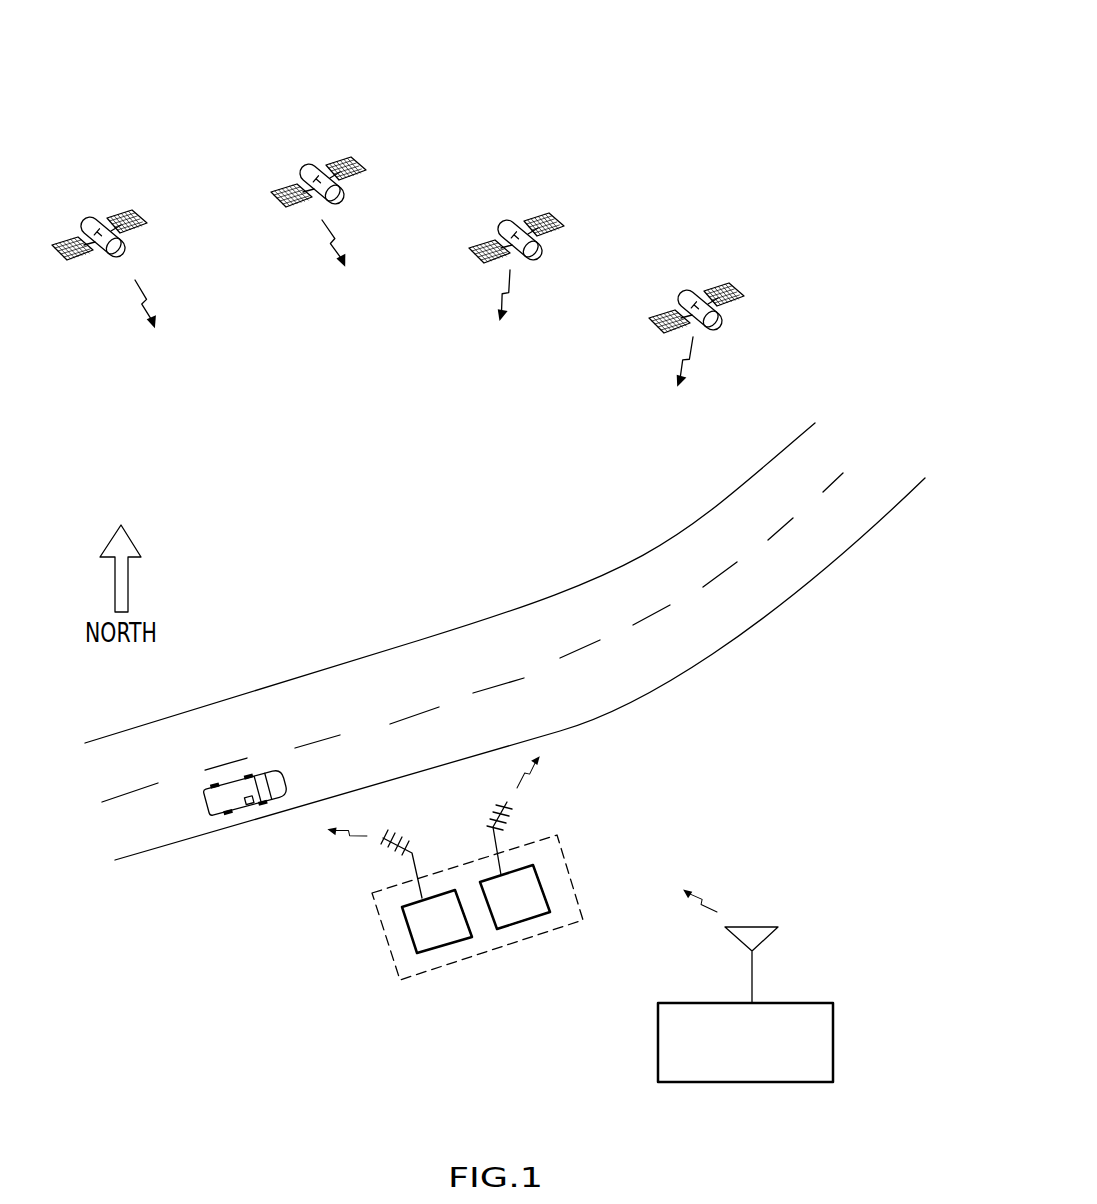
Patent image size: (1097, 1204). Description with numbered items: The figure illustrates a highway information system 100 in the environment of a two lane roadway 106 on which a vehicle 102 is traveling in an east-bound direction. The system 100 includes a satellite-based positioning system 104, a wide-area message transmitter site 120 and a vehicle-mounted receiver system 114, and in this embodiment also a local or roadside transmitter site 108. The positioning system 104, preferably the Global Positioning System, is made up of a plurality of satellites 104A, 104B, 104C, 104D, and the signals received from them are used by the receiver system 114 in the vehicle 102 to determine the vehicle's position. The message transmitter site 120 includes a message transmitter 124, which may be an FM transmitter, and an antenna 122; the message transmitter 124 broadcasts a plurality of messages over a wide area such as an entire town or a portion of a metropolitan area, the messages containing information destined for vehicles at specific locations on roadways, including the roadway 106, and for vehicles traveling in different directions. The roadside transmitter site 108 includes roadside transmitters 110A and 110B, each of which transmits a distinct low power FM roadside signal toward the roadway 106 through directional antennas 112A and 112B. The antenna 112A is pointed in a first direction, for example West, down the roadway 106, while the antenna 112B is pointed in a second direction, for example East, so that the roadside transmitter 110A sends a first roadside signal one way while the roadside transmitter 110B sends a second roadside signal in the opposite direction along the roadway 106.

The highway information system 100 is at (698, 98).
The vehicle 102 is at (218, 810).
The satellite-based positioning system 104 is at (182, 186).
The satellite 104A is at (136, 269).
The satellite 104B is at (349, 211).
The satellite 104C is at (549, 260).
The satellite 104D is at (730, 331).
The roadway 106 is at (414, 648).
The roadside transmitter site 108 is at (567, 858).
The roadside transmitter 110A is at (428, 938).
The roadside transmitter 110B is at (537, 905).
The antenna 112A is at (437, 827).
The antenna 112B is at (489, 830).
The vehicle-mounted receiver system 114 is at (252, 807).
The wide-area message transmitter site 120 is at (645, 1037).
The antenna 122 is at (760, 940).
The message transmitter 124 is at (833, 1052).